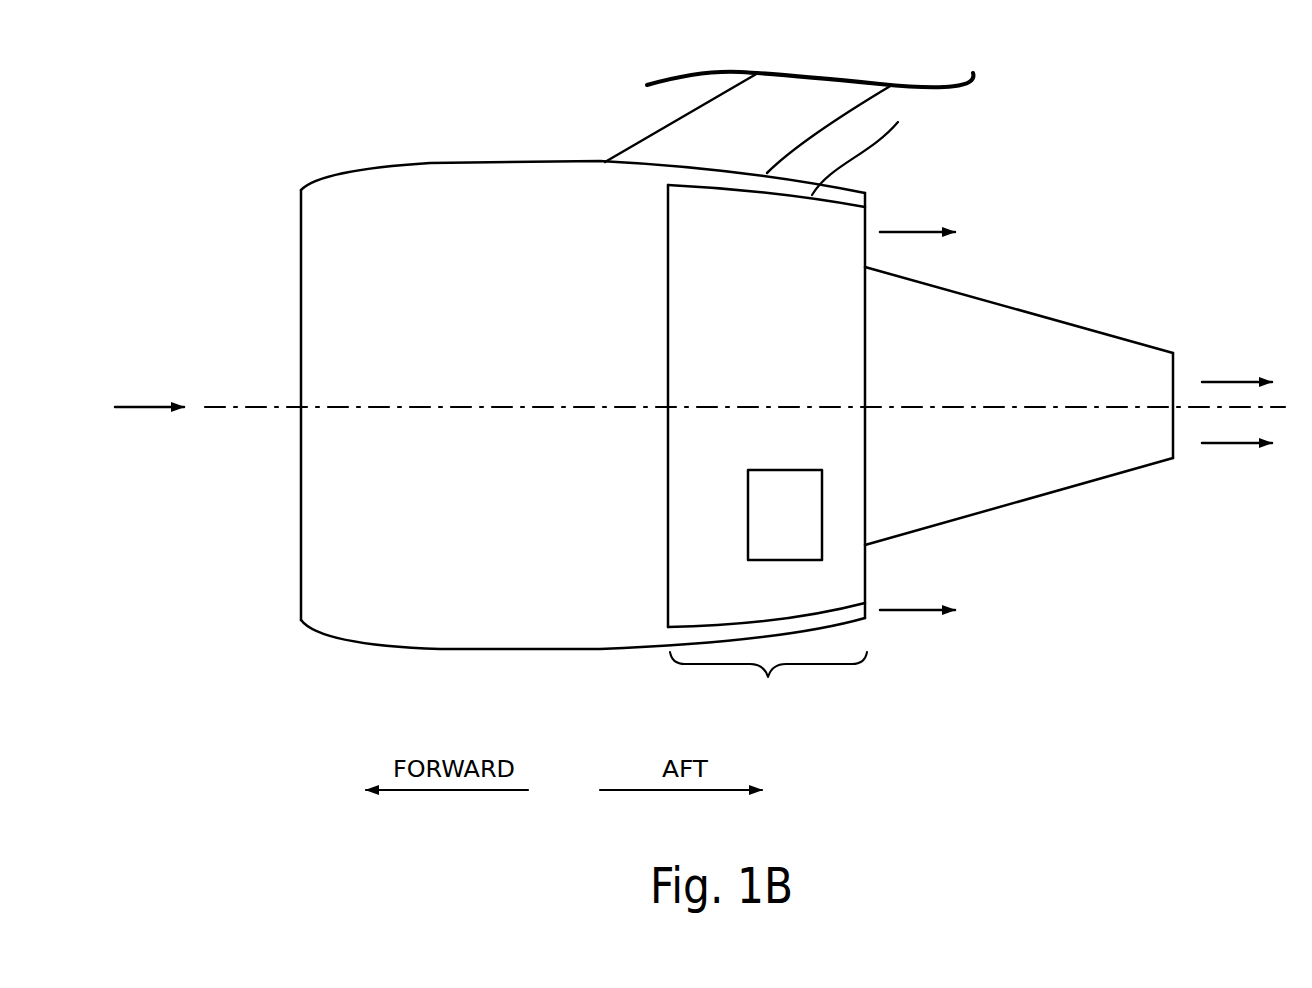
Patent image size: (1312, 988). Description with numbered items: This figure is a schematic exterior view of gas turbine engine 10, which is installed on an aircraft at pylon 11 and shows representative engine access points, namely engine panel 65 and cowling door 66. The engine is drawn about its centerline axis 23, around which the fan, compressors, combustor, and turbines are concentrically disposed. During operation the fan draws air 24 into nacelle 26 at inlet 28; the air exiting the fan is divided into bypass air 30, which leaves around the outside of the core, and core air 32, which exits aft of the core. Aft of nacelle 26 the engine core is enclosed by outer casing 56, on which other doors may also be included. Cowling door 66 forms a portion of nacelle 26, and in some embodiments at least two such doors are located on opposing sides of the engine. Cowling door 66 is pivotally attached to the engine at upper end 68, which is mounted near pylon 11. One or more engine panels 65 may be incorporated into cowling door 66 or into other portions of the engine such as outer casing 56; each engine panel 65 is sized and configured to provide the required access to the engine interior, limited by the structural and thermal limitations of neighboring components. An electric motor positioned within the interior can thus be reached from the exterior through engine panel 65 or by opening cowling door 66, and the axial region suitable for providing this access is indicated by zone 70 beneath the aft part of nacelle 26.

The gas turbine engine 10 is at (1112, 115).
The pylon 11 is at (757, 139).
The centerline axis 23 is at (985, 410).
The air 24 is at (160, 405).
The nacelle 26 is at (428, 162).
The inlet 28 is at (301, 453).
The bypass air 30 is at (902, 232).
The core air 32 is at (1227, 382).
The outer casing 56 is at (918, 278).
The engine panel 65 is at (772, 470).
The cowling door 66 is at (668, 293).
The upper end 68 is at (869, 146).
The zone 70 is at (768, 680).